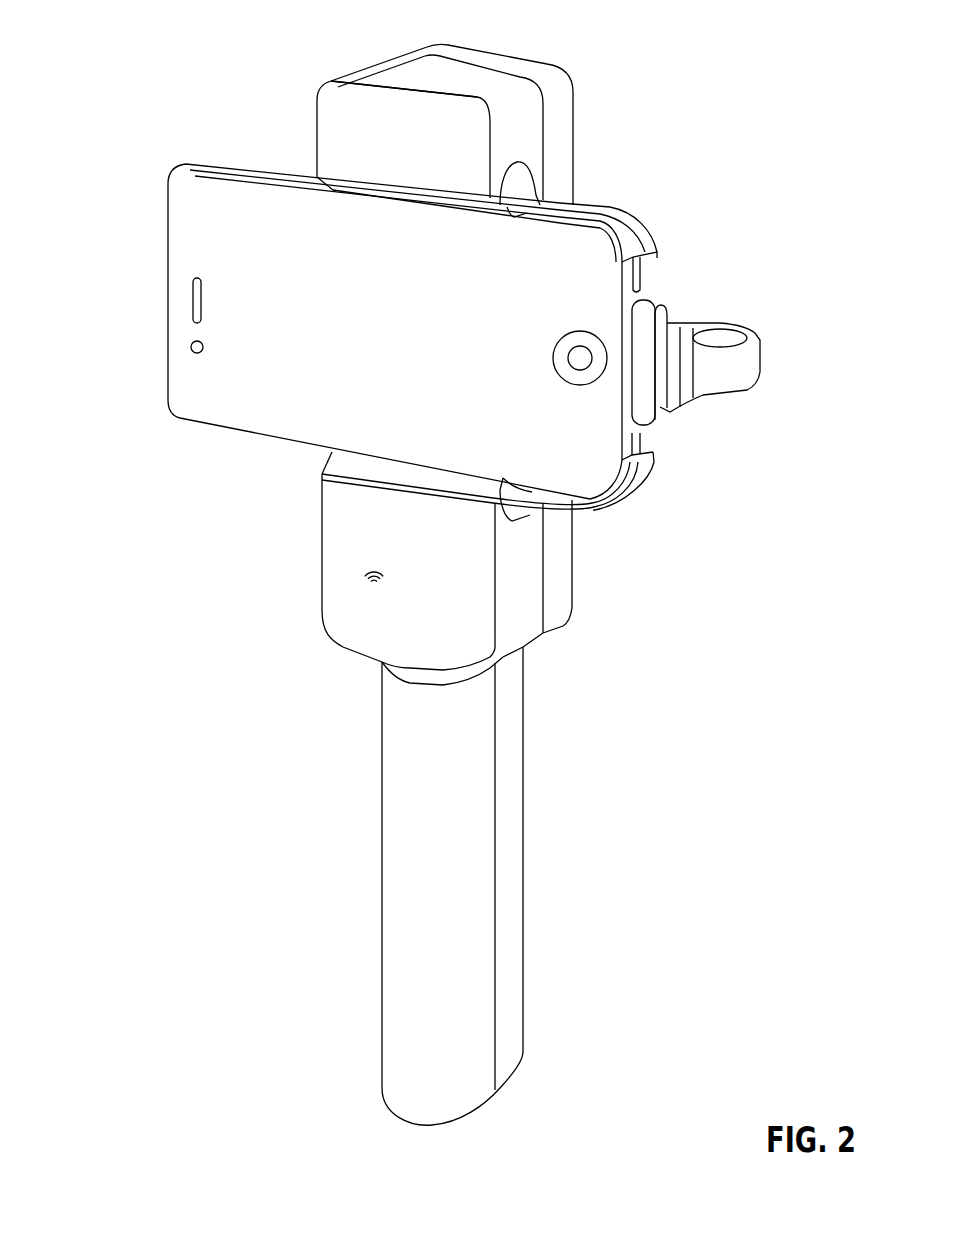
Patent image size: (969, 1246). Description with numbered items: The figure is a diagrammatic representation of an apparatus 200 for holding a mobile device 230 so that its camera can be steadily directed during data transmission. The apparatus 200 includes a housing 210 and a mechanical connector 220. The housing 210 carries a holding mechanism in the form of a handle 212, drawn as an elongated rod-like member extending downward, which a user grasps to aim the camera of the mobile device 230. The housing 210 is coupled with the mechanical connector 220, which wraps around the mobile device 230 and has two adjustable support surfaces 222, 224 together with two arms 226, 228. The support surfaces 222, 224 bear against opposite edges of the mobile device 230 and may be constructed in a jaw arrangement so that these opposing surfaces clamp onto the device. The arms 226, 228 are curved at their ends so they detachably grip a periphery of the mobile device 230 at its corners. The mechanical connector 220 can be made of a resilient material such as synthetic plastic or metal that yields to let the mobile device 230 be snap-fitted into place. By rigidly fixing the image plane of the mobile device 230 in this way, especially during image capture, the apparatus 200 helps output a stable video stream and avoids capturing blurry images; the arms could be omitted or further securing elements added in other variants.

The apparatus 200 is at (401, 563).
The housing 210 is at (553, 58).
The handle 212 is at (536, 819).
The mechanical connector 220 is at (512, 194).
The adjustable support surface 222 is at (412, 480).
The adjustable support surface 224 is at (393, 174).
The arm 226 is at (592, 512).
The arm 228 is at (602, 197).
The mobile device 230 is at (155, 319).